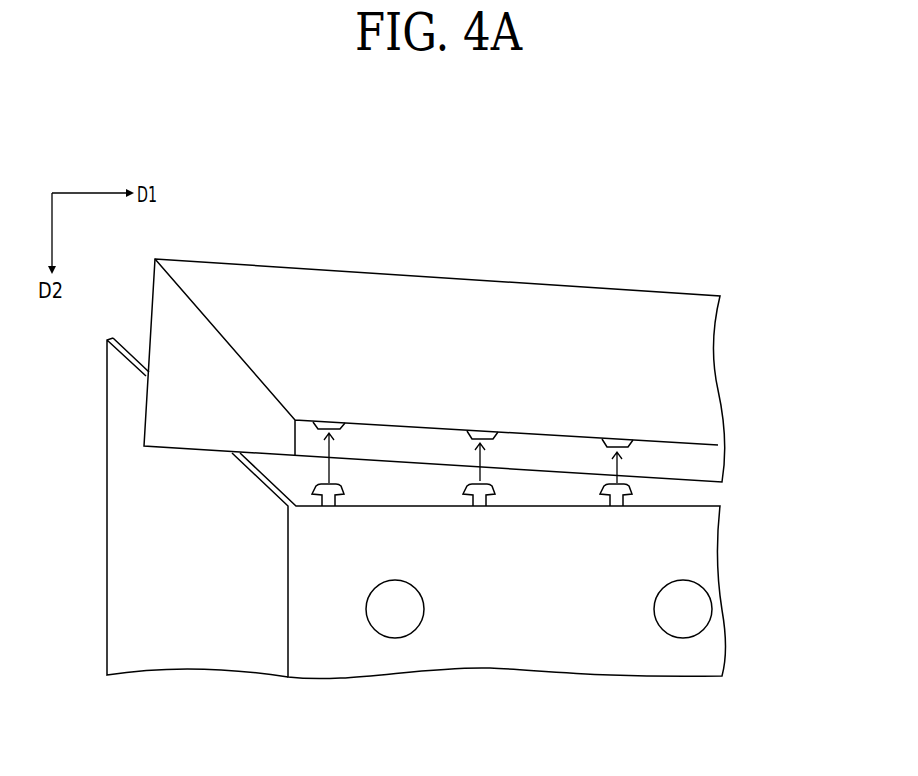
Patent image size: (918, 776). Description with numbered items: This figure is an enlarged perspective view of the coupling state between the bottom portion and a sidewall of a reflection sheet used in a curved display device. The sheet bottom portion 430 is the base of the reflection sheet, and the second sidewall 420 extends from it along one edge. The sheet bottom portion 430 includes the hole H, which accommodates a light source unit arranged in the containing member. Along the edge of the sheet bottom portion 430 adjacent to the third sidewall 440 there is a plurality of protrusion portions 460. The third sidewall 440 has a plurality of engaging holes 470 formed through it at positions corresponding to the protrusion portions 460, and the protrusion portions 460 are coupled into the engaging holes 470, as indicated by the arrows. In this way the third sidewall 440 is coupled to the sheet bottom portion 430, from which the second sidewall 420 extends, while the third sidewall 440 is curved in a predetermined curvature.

The second sidewall 420 is at (221, 657).
The sheet bottom portion 430 is at (577, 657).
The third sidewall 440 is at (707, 359).
The protrusion portions 460 is at (632, 490).
The engaging holes 470 is at (622, 440).
The hole H is at (690, 607).